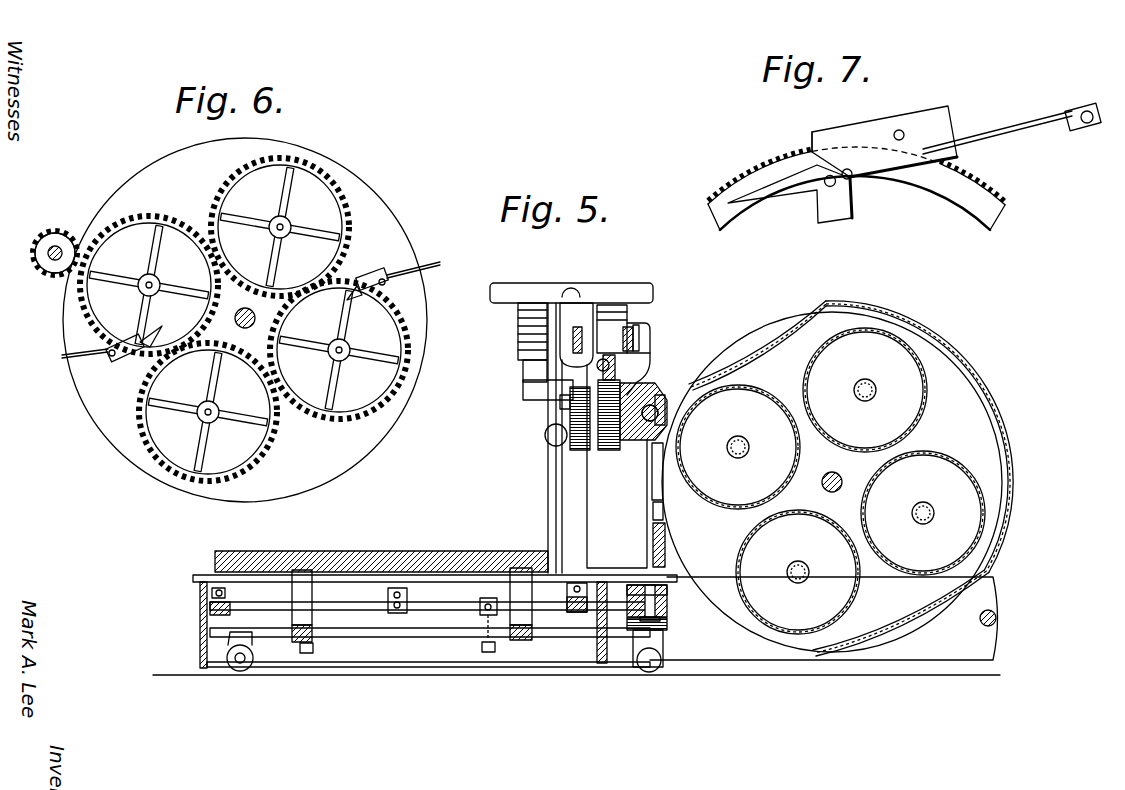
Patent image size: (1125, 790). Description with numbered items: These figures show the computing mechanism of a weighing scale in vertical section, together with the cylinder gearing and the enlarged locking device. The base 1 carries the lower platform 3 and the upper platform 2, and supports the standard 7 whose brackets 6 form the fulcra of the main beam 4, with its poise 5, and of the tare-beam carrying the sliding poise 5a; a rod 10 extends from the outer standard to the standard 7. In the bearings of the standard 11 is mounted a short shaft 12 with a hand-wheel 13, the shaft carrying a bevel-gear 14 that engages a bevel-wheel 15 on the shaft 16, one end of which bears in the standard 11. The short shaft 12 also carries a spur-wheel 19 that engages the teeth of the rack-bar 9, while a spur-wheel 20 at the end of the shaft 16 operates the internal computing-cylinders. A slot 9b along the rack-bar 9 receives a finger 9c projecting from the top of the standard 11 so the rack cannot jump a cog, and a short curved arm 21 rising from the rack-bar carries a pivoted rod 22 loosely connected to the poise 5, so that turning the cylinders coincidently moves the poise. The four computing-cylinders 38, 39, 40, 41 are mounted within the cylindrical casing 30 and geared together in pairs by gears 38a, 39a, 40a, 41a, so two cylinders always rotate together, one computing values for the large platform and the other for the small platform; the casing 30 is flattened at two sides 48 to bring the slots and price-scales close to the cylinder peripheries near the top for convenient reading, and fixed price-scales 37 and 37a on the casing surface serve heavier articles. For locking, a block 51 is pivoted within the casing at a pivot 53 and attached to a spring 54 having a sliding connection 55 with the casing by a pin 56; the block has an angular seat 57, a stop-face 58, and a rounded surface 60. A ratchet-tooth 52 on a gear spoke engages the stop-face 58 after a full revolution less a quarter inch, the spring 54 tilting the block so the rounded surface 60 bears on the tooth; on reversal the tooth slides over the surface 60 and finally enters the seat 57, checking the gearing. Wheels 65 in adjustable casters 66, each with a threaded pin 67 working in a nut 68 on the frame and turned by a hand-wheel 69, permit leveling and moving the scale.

In FIG. 5, the base 1 is at (200, 618).
In FIG. 5, the upper platform 2 is at (545, 283).
In FIG. 5, the lower platform 3 is at (360, 551).
In FIG. 5, the main beam 4 is at (651, 343).
In FIG. 5, the poise 5 is at (540, 338).
In FIG. 5, the poise 5a is at (576, 335).
In FIG. 5, the brackets 6 is at (615, 303).
In FIG. 5, the standard 7 is at (547, 479).
In FIG. 5, the rack-bar 9 is at (545, 390).
In FIG. 5, the slot 9b is at (548, 410).
In FIG. 5, the finger 9c is at (628, 378).
In FIG. 5, the rod 10 is at (615, 329).
In FIG. 5, the standard 11 is at (617, 466).
In FIG. 5, the short shaft 12 is at (580, 452).
In FIG. 5, the hand-wheel 13 is at (545, 436).
In FIG. 5, the bevel-gear 14 is at (640, 445).
In FIG. 5, the bevel-wheel 15 is at (660, 405).
In FIG. 6, the shaft 16 is at (52, 258).
In FIG. 5, the shaft 16 is at (656, 395).
In FIG. 5, the spur-wheel 19 is at (609, 452).
In FIG. 6, the spur-wheel 20 is at (60, 237).
In FIG. 5, the curved arm 21 is at (652, 340).
In FIG. 5, the rod 22 is at (642, 320).
In FIG. 6, the cylindrical casing 30 is at (392, 222).
In FIG. 5, the cylindrical casing 30 is at (1002, 446).
In FIG. 5, the fixed price-scale 37 is at (667, 455).
In FIG. 5, the fixed price-scale 37a is at (666, 516).
In FIG. 5, the computing-cylinder 38 is at (738, 447).
In FIG. 6, the gear 38a is at (148, 284).
In FIG. 5, the computing-cylinder 39 is at (865, 390).
In FIG. 6, the gear 39a is at (279, 226).
In FIG. 5, the computing-cylinder 40 is at (923, 513).
In FIG. 6, the disc gear 40a is at (338, 349).
In FIG. 5, the computing-cylinder 41 is at (798, 572).
In FIG. 6, the disc gear 41a is at (207, 411).
In FIG. 5, the flattened sides 48 is at (851, 478).
In FIG. 6, the block 51 is at (122, 356).
In FIG. 7, the block 51 is at (884, 141).
In FIG. 6, the ratchet-tooth 52 is at (260, 316).
In FIG. 7, the ratchet-tooth 52 is at (818, 194).
In FIG. 6, the pivot 53 is at (110, 357).
In FIG. 7, the pivot 53 is at (900, 130).
In FIG. 6, the spring 54 is at (243, 305).
In FIG. 7, the spring 54 is at (997, 128).
In FIG. 7, the sliding connection 55 is at (1080, 108).
In FIG. 7, the pin 56 is at (1087, 124).
In FIG. 5, the pin 56 is at (488, 632).
In FIG. 7, the angular seat 57 is at (852, 180).
In FIG. 7, the stop-face 58 is at (812, 142).
In FIG. 7, the rounded surface 60 is at (772, 178).
In FIG. 5, the wheels 65 is at (238, 672).
In FIG. 5, the casters 66 is at (212, 635).
In FIG. 5, the threaded pin 67 is at (668, 604).
In FIG. 5, the nut 68 is at (627, 600).
In FIG. 5, the hand-wheel 69 is at (632, 620).